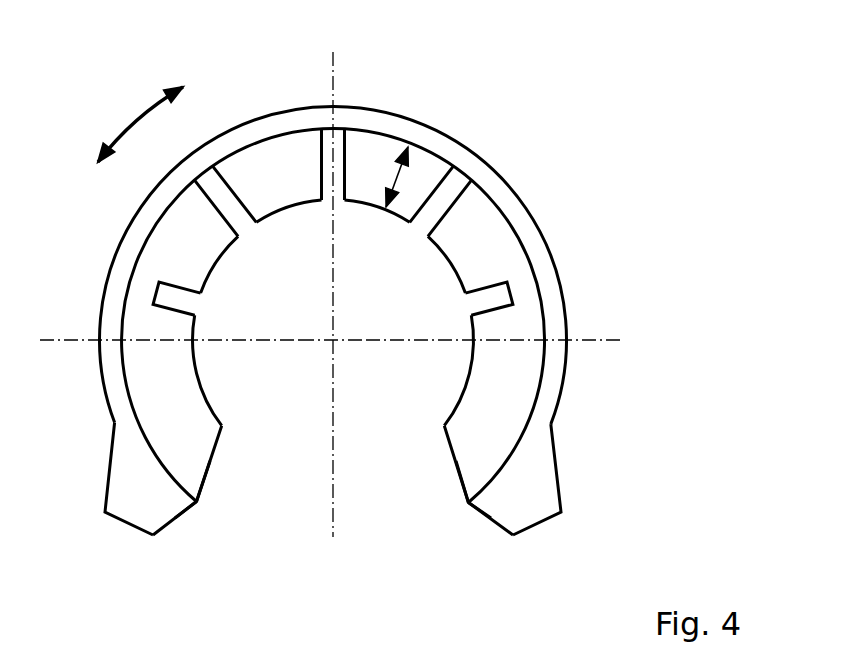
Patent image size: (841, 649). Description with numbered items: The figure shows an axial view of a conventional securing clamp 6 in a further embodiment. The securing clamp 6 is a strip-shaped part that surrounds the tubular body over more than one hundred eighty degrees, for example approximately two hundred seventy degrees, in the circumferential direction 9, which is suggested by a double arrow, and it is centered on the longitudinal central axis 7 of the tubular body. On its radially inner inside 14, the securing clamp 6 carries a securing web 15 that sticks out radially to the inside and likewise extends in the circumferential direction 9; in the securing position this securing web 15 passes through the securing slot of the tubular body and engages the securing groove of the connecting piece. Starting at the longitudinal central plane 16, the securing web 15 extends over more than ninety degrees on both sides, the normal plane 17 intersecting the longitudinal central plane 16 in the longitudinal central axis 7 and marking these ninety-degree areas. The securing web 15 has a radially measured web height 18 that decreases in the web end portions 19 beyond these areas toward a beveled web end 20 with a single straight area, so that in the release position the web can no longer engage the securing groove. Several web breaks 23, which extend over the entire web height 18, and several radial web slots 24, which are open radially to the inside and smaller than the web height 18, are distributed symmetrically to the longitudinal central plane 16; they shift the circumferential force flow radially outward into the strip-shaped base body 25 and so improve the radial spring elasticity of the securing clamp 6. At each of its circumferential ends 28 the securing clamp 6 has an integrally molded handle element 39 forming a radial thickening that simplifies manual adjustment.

The securing clamp 6 is at (585, 176).
The longitudinal central axis 7 is at (330, 345).
The circumferential direction 9 is at (137, 118).
The inside 14 is at (165, 205).
The securing web 15 is at (460, 398).
The longitudinal central plane 16 is at (336, 58).
The normal plane 17 is at (610, 340).
The web height 18 is at (392, 182).
The web end portions 19 is at (193, 437).
The web end 20 is at (198, 505).
The web break 23 is at (322, 164).
The web slot 24 is at (180, 306).
The base body 25 is at (248, 130).
The circumferential ends 28 is at (177, 523).
The handle element 39 is at (118, 500).